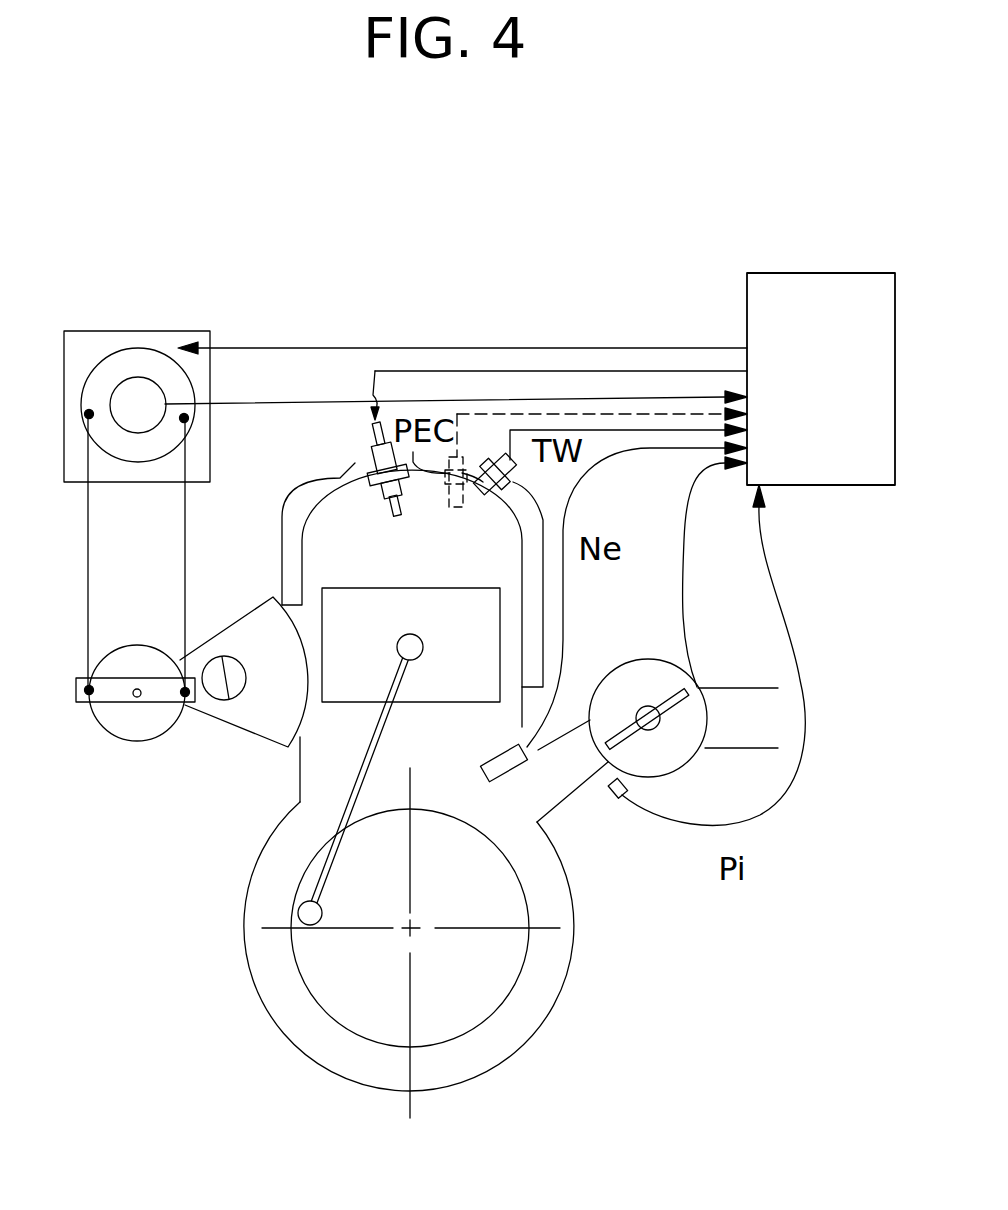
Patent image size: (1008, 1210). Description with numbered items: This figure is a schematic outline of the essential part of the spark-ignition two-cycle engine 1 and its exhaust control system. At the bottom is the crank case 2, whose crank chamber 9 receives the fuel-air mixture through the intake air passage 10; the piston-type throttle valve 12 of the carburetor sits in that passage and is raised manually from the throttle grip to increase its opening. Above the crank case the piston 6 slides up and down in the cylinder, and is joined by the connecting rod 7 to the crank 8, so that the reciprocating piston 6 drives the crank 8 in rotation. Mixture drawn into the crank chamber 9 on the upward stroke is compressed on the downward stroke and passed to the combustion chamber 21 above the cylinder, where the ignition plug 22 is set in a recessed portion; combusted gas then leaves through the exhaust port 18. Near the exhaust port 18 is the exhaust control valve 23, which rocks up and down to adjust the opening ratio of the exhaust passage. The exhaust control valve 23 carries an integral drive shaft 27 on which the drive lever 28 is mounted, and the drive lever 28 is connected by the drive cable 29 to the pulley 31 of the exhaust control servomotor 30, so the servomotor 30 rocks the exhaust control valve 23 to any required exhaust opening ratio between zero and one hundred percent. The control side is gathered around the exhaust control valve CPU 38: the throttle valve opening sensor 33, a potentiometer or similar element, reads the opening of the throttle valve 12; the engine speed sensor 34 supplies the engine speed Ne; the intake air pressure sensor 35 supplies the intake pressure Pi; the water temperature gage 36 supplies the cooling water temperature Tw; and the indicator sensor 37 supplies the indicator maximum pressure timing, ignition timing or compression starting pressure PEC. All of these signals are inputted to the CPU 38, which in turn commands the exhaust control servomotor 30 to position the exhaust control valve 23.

The two-cycle engine 1 is at (453, 318).
The crank case 2 is at (490, 1068).
The piston 6 is at (445, 678).
The connecting rod 7 is at (373, 743).
The crank 8 is at (325, 902).
The crank chamber 9 is at (546, 1004).
The intake air passage 10 is at (542, 788).
The throttle valve 12 is at (673, 713).
The exhaust port 18 is at (300, 620).
The combustion chamber 21 is at (381, 569).
The ignition plug 22 is at (367, 455).
The exhaust control valve 23 is at (245, 712).
The drive shaft 27 is at (137, 698).
The drive lever 28 is at (112, 723).
The drive cable 29 is at (183, 520).
The exhaust control servomotor 30 is at (168, 343).
The pulley 31 is at (117, 353).
The throttle valve opening sensor 33 is at (687, 675).
The engine speed sensor 34 is at (515, 778).
The intake air pressure sensor 35 is at (622, 797).
The water temperature gage 36 is at (518, 492).
The indicator sensor 37 is at (453, 507).
The exhaust control valve CPU 38 is at (775, 273).